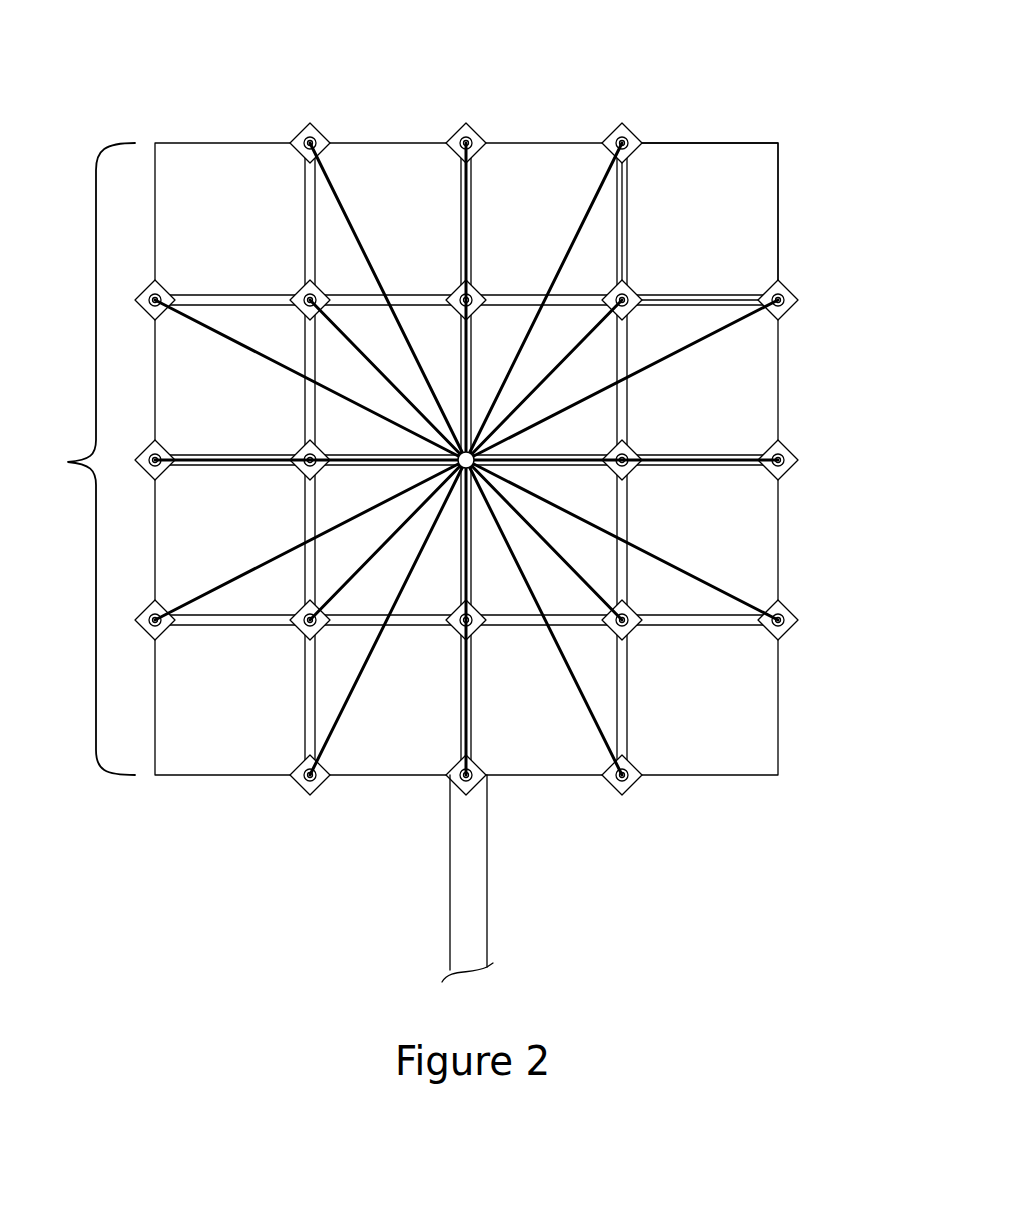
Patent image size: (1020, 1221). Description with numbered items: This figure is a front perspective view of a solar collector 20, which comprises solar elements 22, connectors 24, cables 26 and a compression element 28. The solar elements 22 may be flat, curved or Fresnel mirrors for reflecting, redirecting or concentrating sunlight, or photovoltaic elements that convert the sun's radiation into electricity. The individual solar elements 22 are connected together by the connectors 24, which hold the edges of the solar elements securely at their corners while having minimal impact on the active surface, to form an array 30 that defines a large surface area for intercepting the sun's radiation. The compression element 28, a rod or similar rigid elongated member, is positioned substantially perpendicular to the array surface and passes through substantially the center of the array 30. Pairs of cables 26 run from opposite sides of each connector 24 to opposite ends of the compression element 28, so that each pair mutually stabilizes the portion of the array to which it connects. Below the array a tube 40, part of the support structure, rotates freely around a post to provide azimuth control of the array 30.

The solar collector 20 is at (405, 90).
The solar element 22 is at (733, 221).
The connector 24 is at (793, 304).
The cable 26 is at (677, 569).
The compression element 28 is at (452, 470).
The array 30 is at (80, 459).
The tube 40 is at (466, 844).